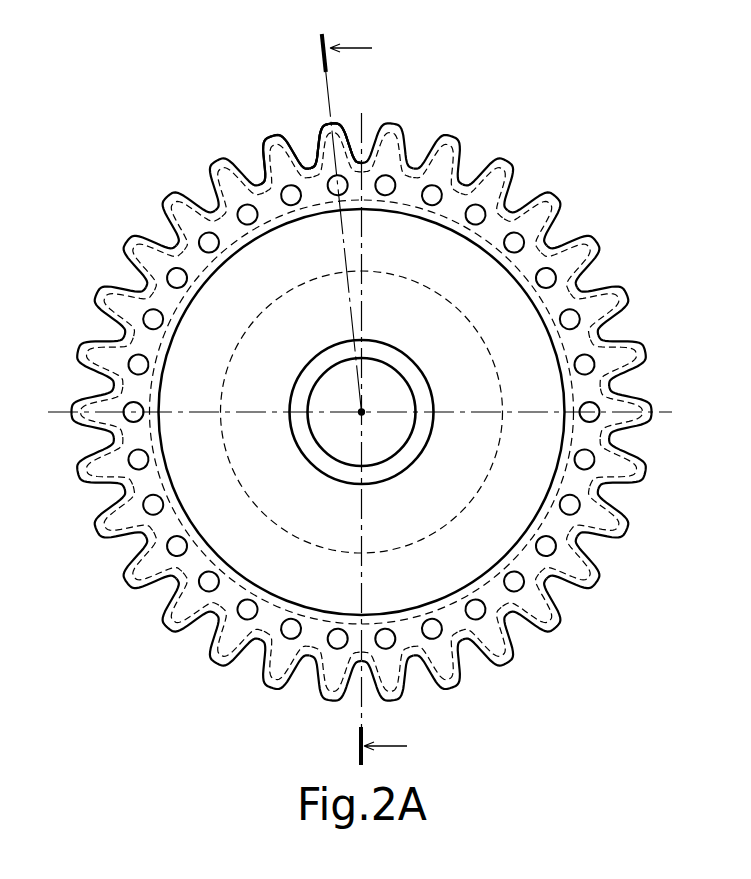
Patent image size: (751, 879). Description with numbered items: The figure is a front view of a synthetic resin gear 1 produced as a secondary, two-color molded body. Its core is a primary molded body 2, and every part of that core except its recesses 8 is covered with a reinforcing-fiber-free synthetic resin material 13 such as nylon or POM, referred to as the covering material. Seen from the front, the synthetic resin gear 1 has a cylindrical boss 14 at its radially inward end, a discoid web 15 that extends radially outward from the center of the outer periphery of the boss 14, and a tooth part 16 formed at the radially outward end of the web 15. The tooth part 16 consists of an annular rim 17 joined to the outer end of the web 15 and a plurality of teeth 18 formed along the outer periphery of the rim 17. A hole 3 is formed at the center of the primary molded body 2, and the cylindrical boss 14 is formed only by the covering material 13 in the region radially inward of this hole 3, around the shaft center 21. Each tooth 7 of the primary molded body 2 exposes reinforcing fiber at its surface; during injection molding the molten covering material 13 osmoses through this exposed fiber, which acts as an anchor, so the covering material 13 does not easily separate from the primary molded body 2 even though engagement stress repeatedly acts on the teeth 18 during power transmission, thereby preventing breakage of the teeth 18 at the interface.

The synthetic resin gear 1 is at (483, 116).
The primary molded body 2 is at (492, 186).
The hole 3 is at (447, 300).
The tooth 7 is at (396, 124).
The recess 8 is at (333, 194).
The reinforcing-fiber-free synthetic resin material 13 is at (283, 175).
The cylindrical boss 14 is at (413, 447).
The discoid web 15 is at (480, 447).
The tooth part 16 is at (287, 57).
The annular rim 17 is at (312, 166).
The teeth 18 is at (320, 160).
The shaft center 21 is at (360, 428).